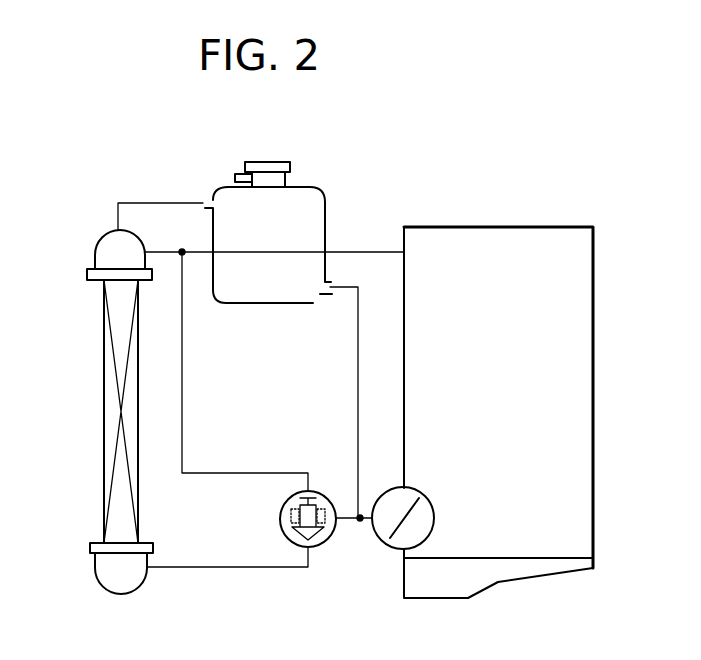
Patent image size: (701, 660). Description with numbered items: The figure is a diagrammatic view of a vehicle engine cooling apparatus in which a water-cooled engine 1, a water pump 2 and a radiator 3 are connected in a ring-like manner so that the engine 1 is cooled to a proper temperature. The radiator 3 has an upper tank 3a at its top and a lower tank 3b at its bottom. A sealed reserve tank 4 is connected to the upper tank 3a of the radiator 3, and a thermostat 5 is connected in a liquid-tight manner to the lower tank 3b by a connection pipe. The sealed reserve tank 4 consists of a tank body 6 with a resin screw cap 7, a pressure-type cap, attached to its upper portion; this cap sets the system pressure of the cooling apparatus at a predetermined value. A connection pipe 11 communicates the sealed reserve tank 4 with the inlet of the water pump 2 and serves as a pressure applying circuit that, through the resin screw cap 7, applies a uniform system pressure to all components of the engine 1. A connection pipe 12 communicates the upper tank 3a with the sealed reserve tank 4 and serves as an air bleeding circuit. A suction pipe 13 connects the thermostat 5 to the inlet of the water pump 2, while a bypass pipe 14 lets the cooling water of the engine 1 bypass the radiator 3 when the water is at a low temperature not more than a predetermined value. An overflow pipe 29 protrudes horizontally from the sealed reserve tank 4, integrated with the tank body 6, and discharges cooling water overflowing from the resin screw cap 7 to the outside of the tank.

The engine 1 is at (584, 227).
The water pump 2 is at (383, 543).
The radiator 3 is at (104, 409).
The upper tank 3a is at (105, 248).
The lower tank 3b is at (108, 572).
The sealed reserve tank 4 is at (326, 171).
The thermostat 5 is at (285, 520).
The tank body 6 is at (325, 207).
The resin screw cap 7 is at (266, 162).
The connection pipe 11 is at (357, 398).
The connection pipe 12 is at (152, 203).
The suction pipe 13 is at (352, 514).
The bypass pipe 14 is at (183, 403).
The overflow pipe 29 is at (240, 177).